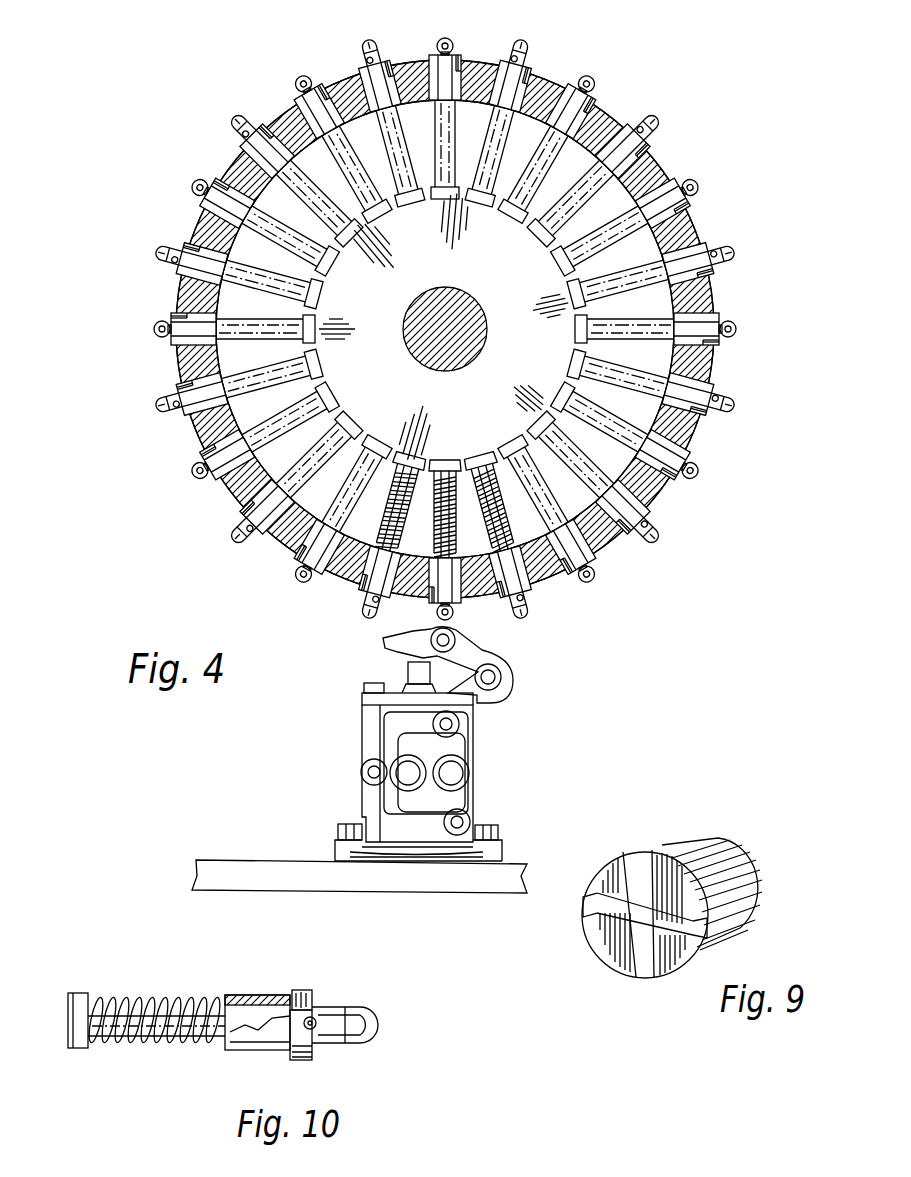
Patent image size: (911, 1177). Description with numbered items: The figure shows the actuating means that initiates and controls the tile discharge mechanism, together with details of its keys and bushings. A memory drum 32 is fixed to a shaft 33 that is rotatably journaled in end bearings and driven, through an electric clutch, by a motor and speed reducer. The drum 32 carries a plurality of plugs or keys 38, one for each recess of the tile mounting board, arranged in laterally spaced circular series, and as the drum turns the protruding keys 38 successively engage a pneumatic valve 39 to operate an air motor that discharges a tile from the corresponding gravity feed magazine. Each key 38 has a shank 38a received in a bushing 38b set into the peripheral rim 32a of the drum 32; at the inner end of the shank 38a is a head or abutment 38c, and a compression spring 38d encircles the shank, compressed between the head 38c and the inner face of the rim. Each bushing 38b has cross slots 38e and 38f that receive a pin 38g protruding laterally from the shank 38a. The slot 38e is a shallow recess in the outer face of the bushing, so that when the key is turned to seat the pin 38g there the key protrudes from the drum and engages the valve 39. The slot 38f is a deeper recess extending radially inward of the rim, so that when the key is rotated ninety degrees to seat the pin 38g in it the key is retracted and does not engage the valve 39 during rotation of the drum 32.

In FIG. 4, the memory drum 32 is at (478, 329).
In FIG. 4, the peripheral rim 32a is at (459, 329).
In FIG. 4, the shaft 33 is at (469, 329).
In FIG. 4, the key 38 is at (414, 312).
In FIG. 4, the shank 38a is at (445, 506).
In FIG. 10, the shank 38a is at (125, 1042).
In FIG. 9, the bushing 38b is at (707, 852).
In FIG. 10, the bushing 38b is at (262, 1052).
In FIG. 10, the head 38c is at (72, 1035).
In FIG. 4, the compression spring 38d is at (428, 511).
In FIG. 10, the compression spring 38d is at (116, 1000).
In FIG. 9, the shallow cross slot 38e is at (644, 862).
In FIG. 10, the shallow cross slot 38e is at (301, 1060).
In FIG. 9, the deep cross slot 38f is at (590, 908).
In FIG. 10, the deep cross slot 38f is at (296, 990).
In FIG. 10, the pin 38g is at (316, 1018).
In FIG. 4, the pneumatic valve 39 is at (362, 752).